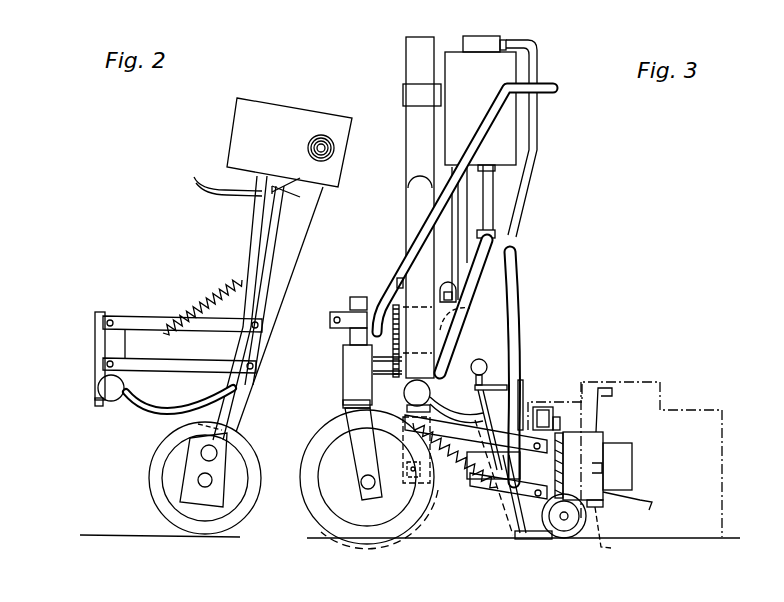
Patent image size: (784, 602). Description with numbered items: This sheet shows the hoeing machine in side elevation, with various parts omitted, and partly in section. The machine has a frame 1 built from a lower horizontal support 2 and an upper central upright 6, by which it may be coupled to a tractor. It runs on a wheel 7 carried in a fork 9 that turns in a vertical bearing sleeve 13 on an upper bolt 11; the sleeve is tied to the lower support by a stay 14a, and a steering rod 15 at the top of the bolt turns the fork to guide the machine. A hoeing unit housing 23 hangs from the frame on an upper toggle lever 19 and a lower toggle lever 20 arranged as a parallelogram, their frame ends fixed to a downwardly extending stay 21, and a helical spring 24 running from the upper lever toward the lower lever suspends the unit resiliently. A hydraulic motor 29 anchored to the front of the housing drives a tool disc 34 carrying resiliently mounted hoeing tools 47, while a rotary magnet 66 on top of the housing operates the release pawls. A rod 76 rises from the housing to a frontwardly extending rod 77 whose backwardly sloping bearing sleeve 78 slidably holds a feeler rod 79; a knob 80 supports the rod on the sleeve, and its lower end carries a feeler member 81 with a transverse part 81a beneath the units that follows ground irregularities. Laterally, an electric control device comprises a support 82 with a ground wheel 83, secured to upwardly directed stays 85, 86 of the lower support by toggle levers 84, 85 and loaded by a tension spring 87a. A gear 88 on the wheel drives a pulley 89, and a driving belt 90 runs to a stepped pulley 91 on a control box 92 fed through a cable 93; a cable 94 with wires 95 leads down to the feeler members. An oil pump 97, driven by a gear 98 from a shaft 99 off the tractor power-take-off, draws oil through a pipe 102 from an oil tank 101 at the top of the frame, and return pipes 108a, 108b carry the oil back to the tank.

In FIG. 3, the frame 1 is at (403, 212).
In FIG. 2, the lower horizontal support 2 is at (112, 402).
In FIG. 3, the lower horizontal support 2 is at (404, 393).
In FIG. 3, the upper central upright 6 is at (420, 150).
In FIG. 3, the wheel 7 is at (333, 513).
In FIG. 3, the fork 9 is at (362, 498).
In FIG. 3, the upper bolt 11 is at (351, 300).
In FIG. 3, the vertical bearing sleeve 13 is at (350, 346).
In FIG. 3, the stay 14a is at (375, 360).
In FIG. 3, the steering rod 15 is at (492, 120).
In FIG. 3, the upper toggle lever 19 is at (478, 456).
In FIG. 3, the lower toggle lever 20 is at (445, 478).
In FIG. 3, the stay 21 is at (345, 408).
In FIG. 3, the housing 23 is at (556, 465).
In FIG. 3, the helical spring 24 is at (472, 443).
In FIG. 3, the hydraulic motor 29 is at (548, 458).
In FIG. 3, the tool disc 34 is at (600, 441).
In FIG. 3, the hoeing tool 47 is at (612, 385).
In FIG. 3, the rotary magnet 66 is at (543, 410).
In FIG. 3, the rod 76 is at (525, 393).
In FIG. 3, the frontwardly extending rod 77 is at (507, 386).
In FIG. 3, the bearing sleeve 78 is at (487, 378).
In FIG. 3, the feeler rod 79 is at (511, 528).
In FIG. 3, the knob 80 is at (475, 362).
In FIG. 3, the feeler member 81 is at (533, 536).
In FIG. 3, the transverse part of feeler member 81a is at (572, 536).
In FIG. 2, the support 82 is at (255, 246).
In FIG. 2, the wheel 83 is at (214, 528).
In FIG. 2, the toggle lever 84 is at (140, 322).
In FIG. 2, the toggle lever 85 is at (148, 364).
In FIG. 2, the stay 86 is at (100, 364).
In FIG. 2, the tension spring 87a is at (187, 308).
In FIG. 2, the gear 88 is at (193, 497).
In FIG. 2, the pulley 89 is at (205, 456).
In FIG. 2, the driving belt 90 is at (307, 220).
In FIG. 2, the stepped pulley 91 is at (322, 134).
In FIG. 2, the control box 92 is at (243, 115).
In FIG. 2, the cable 93 is at (217, 187).
In FIG. 2, the cable 94 is at (273, 273).
In FIG. 3, the wires 95 is at (484, 507).
In FIG. 3, the oil pump 97 is at (446, 321).
In FIG. 3, the gear 98 is at (395, 300).
In FIG. 3, the shaft 99 is at (382, 337).
In FIG. 3, the oil tank 101 is at (510, 152).
In FIG. 3, the pipe 102 is at (472, 297).
In FIG. 3, the return pipe 108a is at (510, 272).
In FIG. 3, the return pipe 108b is at (520, 206).